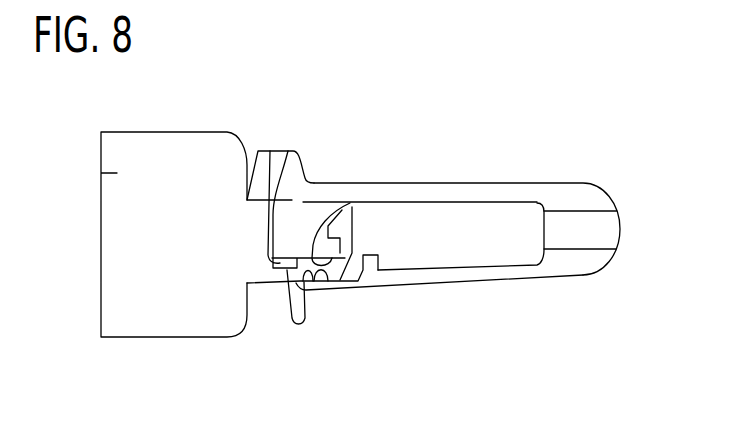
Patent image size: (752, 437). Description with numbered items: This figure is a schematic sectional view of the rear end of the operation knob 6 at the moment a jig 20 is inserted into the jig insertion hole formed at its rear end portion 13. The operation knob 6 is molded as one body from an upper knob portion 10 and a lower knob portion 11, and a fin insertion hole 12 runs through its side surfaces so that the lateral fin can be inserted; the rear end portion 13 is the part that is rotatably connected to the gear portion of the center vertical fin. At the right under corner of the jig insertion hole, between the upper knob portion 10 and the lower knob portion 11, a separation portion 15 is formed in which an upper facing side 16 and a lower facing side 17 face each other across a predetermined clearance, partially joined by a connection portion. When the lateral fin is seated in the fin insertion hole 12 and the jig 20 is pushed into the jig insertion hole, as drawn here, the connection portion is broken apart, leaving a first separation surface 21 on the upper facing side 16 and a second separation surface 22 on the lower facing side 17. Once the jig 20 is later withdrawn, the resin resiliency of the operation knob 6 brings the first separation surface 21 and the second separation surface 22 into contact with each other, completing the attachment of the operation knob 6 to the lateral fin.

The operation knob 6 is at (433, 238).
The upper knob portion 10 is at (423, 193).
The lower knob portion 11 is at (428, 284).
The fin insertion hole 12 is at (507, 245).
The rear end portion 13 is at (270, 150).
The separation portion 15 is at (327, 283).
The upper facing side 16 is at (328, 226).
The lower facing side 17 is at (303, 300).
The jig 20 is at (99, 170).
The first separation surface 21 is at (272, 242).
The second separation surface 22 is at (300, 275).